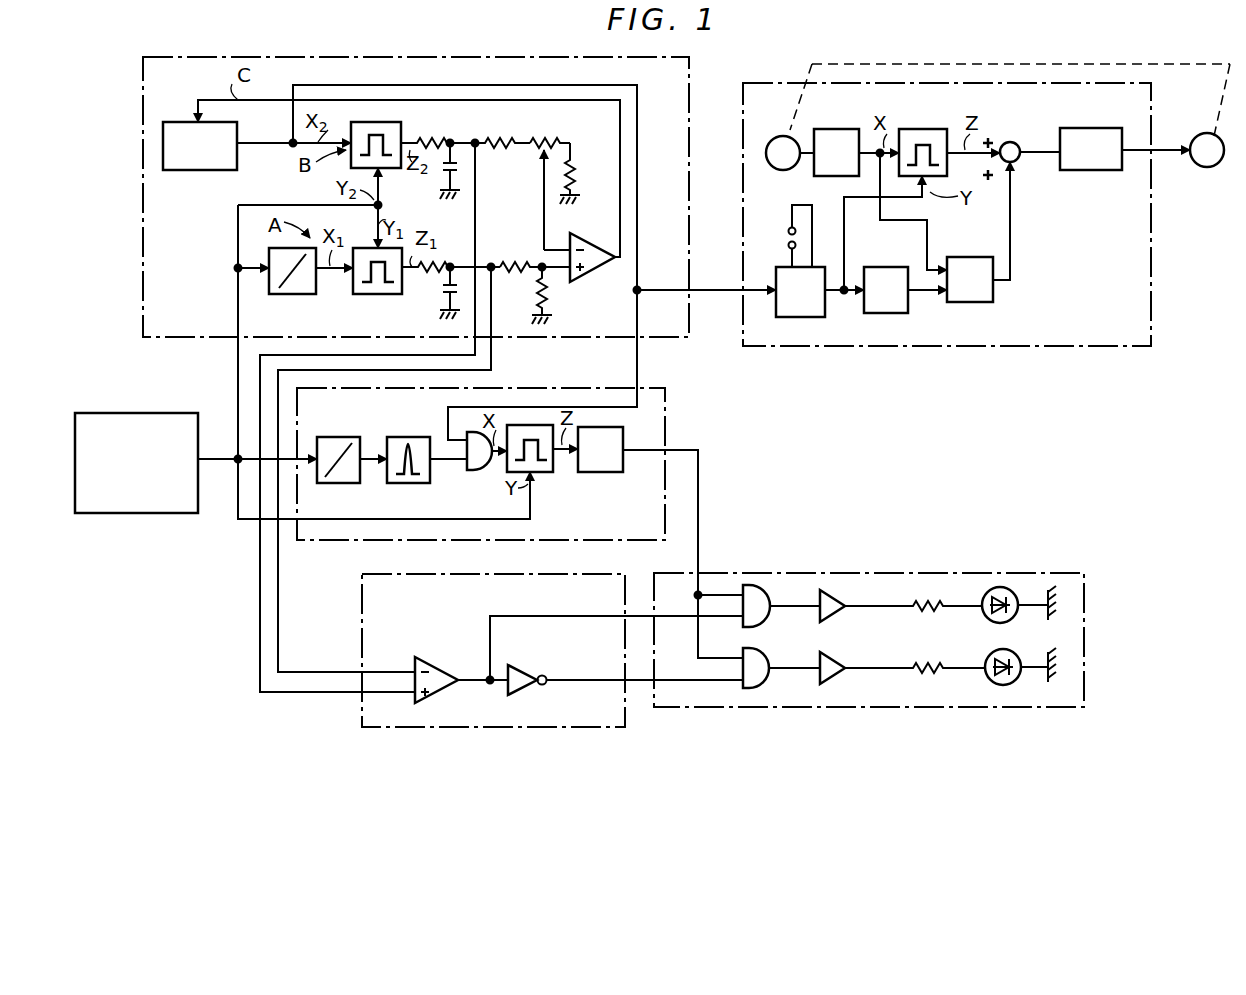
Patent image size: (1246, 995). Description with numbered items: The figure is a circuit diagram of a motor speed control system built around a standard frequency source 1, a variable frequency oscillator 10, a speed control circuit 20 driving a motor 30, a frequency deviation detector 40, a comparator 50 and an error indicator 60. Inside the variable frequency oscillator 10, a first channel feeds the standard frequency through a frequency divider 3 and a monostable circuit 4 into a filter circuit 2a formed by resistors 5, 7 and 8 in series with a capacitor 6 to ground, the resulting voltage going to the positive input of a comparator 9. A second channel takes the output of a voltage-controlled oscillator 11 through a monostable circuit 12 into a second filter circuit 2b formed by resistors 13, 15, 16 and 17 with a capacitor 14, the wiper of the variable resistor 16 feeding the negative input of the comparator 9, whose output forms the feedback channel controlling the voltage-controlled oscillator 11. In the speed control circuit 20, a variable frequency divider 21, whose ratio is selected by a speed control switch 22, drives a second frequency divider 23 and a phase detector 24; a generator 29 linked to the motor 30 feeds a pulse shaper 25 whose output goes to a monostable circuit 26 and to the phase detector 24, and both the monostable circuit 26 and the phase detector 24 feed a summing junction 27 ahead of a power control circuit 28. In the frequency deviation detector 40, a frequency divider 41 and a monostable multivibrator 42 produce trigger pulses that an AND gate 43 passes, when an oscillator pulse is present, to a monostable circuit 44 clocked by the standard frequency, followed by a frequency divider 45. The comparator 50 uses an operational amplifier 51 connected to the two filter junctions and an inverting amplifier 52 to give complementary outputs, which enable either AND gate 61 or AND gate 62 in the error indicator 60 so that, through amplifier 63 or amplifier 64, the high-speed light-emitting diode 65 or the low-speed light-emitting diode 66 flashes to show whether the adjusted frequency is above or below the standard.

The standard frequency source 1 is at (170, 412).
The filter circuit 2a is at (484, 258).
The second output line 2b is at (490, 122).
The frequency divider 3 is at (288, 296).
The monostable circuit 4 is at (376, 296).
The resistor 5 is at (440, 262).
The capacitor 6 is at (440, 288).
The resistor 7 is at (512, 262).
The resistor 8 is at (550, 296).
The comparator 9 is at (588, 246).
The variable frequency oscillator 10 is at (143, 305).
The voltage-controlled oscillator 11 is at (192, 172).
The monostable circuit 12 is at (420, 142).
The resistor 13 is at (448, 140).
The capacitor 14 is at (378, 172).
The resistor 15 is at (504, 140).
The variable resistor 16 is at (545, 140).
The resistor 17 is at (576, 172).
The speed control circuit 20 is at (1038, 348).
The variable frequency divider 21 is at (798, 318).
The speed control switch 22 is at (786, 238).
The second frequency divider 23 is at (880, 314).
The phase detector 24 is at (974, 304).
The pulse shaper 25 is at (832, 128).
The monostable circuit 26 is at (918, 128).
The summing junction 27 is at (1016, 142).
The power control circuit 28 is at (1090, 127).
The generator 29 is at (774, 140).
The motor 30 is at (1196, 136).
The frequency deviation detector 40 is at (666, 430).
The frequency divider 41 is at (340, 436).
The pulse generator 42 is at (408, 436).
The AND gate 43 is at (474, 470).
The monostable circuit 44 is at (540, 474).
The frequency divider 45 is at (608, 474).
The comparator 50 is at (522, 574).
The operational amplifier 51 is at (432, 658).
The inverting amplifier 52 is at (528, 666).
The error indicator 60 is at (925, 573).
The AND gate 61 is at (764, 592).
The AND gate 62 is at (764, 648).
The amplifier 63 is at (838, 594).
The amplifier 64 is at (838, 654).
The high-speed indicating light-emitting diode 65 is at (986, 592).
The low-speed indicating light-emitting diode 66 is at (988, 652).